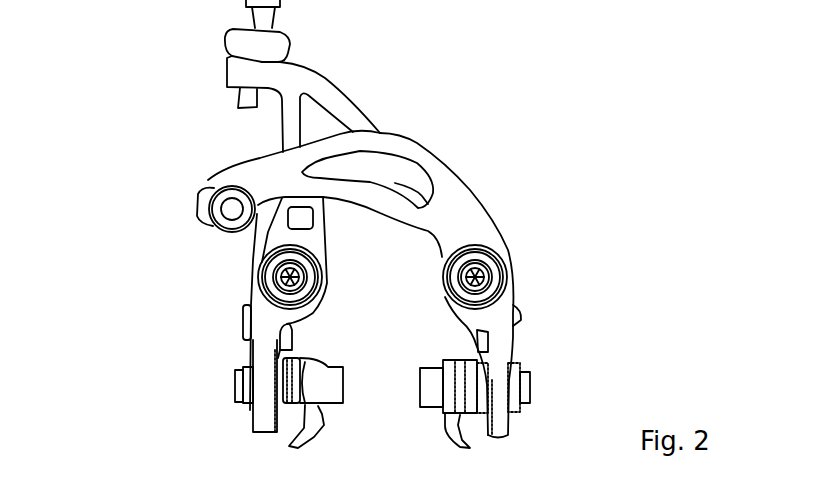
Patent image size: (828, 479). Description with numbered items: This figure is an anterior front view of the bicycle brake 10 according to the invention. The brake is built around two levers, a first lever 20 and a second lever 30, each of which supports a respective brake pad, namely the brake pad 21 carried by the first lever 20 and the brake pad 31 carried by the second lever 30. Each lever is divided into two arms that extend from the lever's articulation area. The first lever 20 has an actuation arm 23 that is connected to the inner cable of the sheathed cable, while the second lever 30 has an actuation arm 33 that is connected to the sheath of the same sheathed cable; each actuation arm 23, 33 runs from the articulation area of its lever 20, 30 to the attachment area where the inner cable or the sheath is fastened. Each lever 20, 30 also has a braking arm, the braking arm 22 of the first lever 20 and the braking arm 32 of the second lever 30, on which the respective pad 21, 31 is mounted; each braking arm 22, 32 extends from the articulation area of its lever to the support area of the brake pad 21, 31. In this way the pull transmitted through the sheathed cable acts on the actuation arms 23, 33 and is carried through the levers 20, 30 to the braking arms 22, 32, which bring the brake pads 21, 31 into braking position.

The bicycle brake 10 is at (595, 63).
The first lever 20 is at (213, 172).
The brake pad 21 is at (433, 382).
The braking arm 22 is at (490, 327).
The actuation arm 23 is at (470, 184).
The second lever 30 is at (207, 73).
The brake pad 31 is at (330, 383).
The braking arm 32 is at (262, 355).
The actuation arm 33 is at (348, 112).